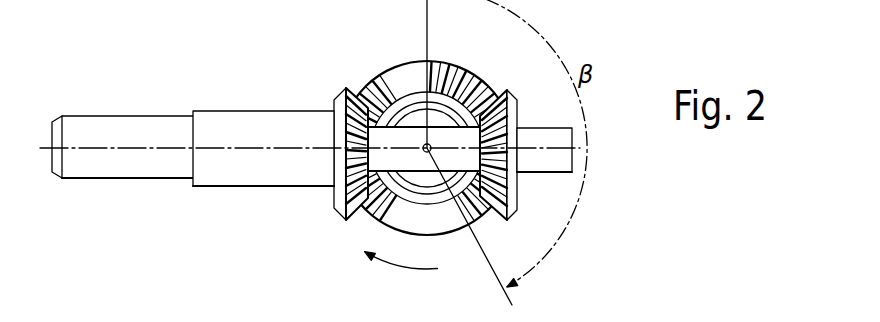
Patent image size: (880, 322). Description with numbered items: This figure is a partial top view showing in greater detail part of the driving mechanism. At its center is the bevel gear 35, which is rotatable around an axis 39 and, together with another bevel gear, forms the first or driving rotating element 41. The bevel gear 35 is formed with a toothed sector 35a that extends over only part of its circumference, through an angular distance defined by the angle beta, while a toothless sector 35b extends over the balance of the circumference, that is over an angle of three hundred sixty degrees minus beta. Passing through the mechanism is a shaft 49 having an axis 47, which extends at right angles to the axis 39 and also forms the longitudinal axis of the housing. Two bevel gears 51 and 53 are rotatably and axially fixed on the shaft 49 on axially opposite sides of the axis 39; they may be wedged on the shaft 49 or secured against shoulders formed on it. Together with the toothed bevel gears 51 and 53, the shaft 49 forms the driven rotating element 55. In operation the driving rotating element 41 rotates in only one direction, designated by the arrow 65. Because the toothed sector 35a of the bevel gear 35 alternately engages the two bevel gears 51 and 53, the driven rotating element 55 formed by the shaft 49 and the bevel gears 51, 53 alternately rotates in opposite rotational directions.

The bevel gear 35 is at (442, 130).
The toothed sector 35a is at (492, 88).
The toothless sector 35b is at (395, 68).
The axis 39 is at (426, 152).
The rotating element 41 is at (434, 50).
The axis 47 is at (118, 147).
The shaft 49 is at (238, 110).
The bevel gear 51 is at (502, 82).
The bevel gear 53 is at (344, 90).
The rotating element 55 is at (353, 76).
The arrow 65 is at (404, 268).